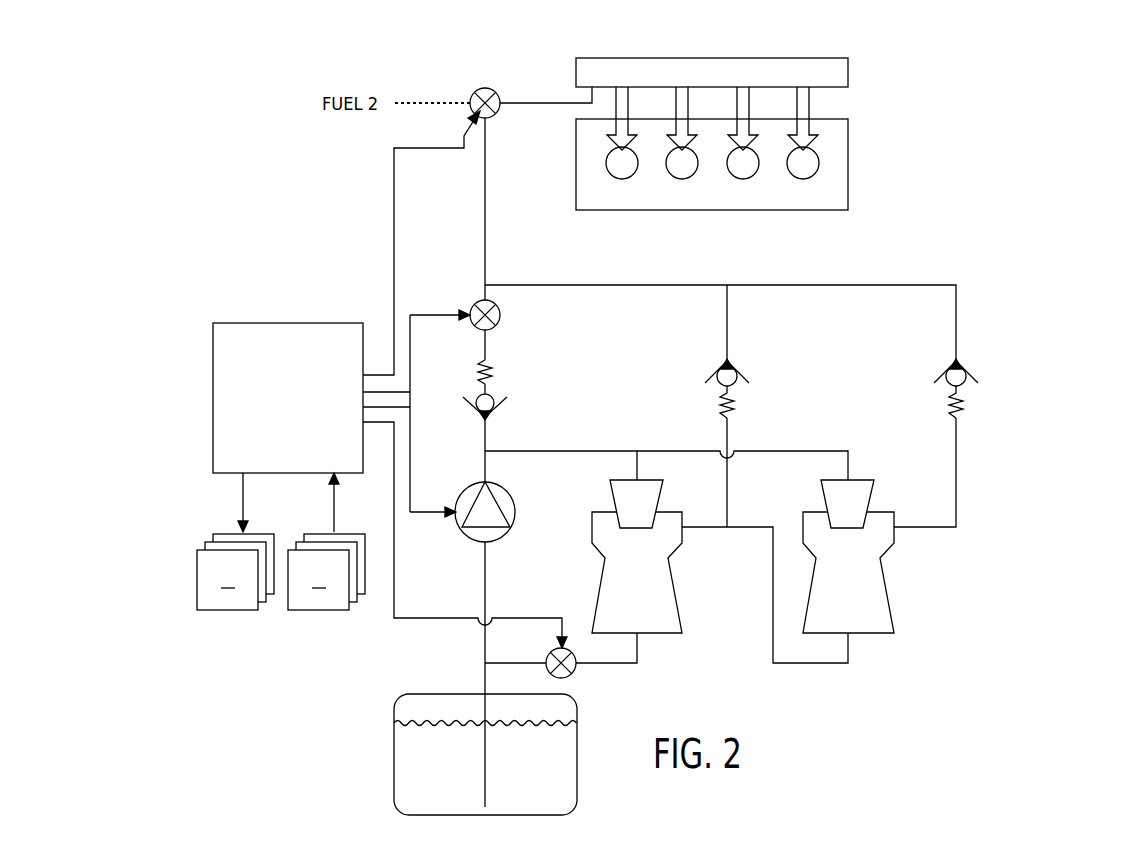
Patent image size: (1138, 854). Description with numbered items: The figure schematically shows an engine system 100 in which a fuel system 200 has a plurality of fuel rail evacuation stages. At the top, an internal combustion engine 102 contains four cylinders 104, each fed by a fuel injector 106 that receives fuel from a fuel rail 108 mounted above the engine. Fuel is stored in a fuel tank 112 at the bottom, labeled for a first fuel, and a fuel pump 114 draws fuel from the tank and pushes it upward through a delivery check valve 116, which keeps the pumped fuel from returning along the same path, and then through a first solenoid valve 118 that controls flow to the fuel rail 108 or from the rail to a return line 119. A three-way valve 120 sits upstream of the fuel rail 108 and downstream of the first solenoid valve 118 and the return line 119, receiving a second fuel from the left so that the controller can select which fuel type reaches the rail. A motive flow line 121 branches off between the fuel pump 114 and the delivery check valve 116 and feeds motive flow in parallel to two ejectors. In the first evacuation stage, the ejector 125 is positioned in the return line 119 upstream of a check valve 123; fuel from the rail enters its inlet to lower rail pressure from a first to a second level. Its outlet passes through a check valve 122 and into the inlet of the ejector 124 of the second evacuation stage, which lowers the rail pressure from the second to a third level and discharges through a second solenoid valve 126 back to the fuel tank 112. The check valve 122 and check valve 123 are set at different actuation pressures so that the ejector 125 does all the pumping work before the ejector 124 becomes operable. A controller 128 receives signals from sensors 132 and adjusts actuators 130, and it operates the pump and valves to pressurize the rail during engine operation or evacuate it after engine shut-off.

The engine system 100 is at (129, 82).
The fuel system 200 is at (1054, 327).
The internal combustion engine 102 is at (576, 158).
The cylinders 104 is at (803, 179).
The fuel injectors 106 is at (810, 112).
The fuel rail 108 is at (605, 58).
The fuel tank 112 is at (423, 694).
The fuel pump 114 is at (501, 488).
The delivery check valve 116 is at (496, 396).
The first solenoid valve 118 is at (499, 307).
The return line 119 is at (881, 285).
The three-way valve 120 is at (484, 88).
The motive flow line 121 is at (577, 451).
The check valve 122 is at (737, 367).
The check valve 123 is at (965, 367).
The ejector 124 is at (672, 586).
The ejector 125 is at (884, 582).
The second solenoid valve 126 is at (571, 673).
The controller 128 is at (274, 420).
The actuators 130 is at (228, 611).
The sensors 132 is at (320, 611).